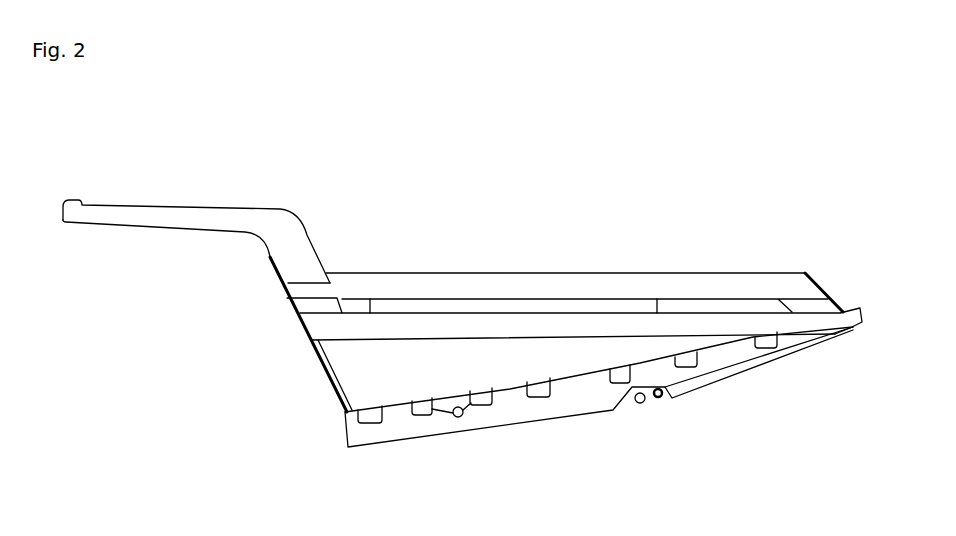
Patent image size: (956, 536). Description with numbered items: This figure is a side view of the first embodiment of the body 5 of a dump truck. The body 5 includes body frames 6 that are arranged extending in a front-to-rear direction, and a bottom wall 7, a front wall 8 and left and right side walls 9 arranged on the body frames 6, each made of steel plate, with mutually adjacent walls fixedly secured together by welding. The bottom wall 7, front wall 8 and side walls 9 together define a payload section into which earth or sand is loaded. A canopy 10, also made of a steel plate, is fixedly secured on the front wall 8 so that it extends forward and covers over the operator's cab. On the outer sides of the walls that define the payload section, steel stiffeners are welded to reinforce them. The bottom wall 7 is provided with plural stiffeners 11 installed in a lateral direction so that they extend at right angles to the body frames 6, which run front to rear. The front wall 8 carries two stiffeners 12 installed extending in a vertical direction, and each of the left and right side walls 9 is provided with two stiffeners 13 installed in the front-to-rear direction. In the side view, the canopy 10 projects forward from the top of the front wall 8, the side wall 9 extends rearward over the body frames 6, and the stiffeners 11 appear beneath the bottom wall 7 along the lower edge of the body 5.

The body 5 is at (732, 273).
The body frames 6 is at (588, 413).
The bottom wall 7 is at (507, 390).
The front wall 8 is at (328, 360).
The left and right side walls 9 is at (397, 377).
The canopy 10 is at (168, 208).
The stiffeners 11 is at (482, 408).
The stiffeners 12 is at (328, 382).
The stiffeners 13 is at (497, 313).